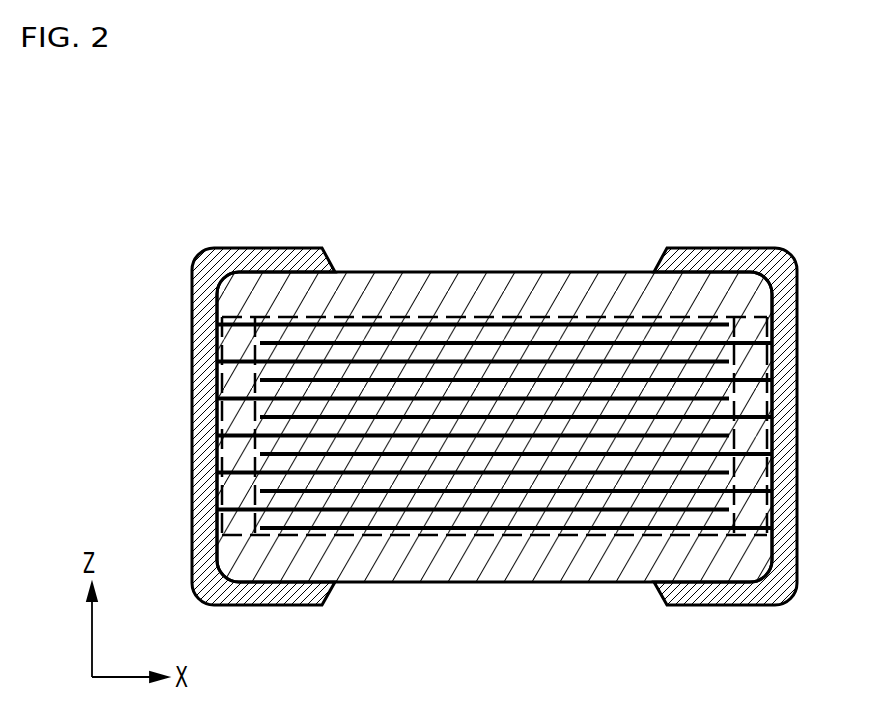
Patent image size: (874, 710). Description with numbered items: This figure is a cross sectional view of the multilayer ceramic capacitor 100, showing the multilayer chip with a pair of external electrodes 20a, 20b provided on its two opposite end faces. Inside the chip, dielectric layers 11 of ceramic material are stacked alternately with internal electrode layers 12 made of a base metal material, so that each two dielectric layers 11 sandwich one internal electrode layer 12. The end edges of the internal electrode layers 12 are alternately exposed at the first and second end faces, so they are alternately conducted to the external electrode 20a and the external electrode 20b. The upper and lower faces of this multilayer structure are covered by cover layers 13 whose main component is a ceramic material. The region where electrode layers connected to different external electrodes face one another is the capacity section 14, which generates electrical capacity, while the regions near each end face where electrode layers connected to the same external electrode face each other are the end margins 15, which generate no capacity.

The multilayer ceramic capacitor 100 is at (703, 197).
The dielectric layer 11 is at (593, 500).
The internal electrode layer 12 is at (442, 475).
The cover layer 13 is at (395, 288).
The capacity section 14 is at (517, 318).
The end margin 15 is at (238, 318).
The external electrode 20a is at (217, 248).
The external electrode 20b is at (763, 248).